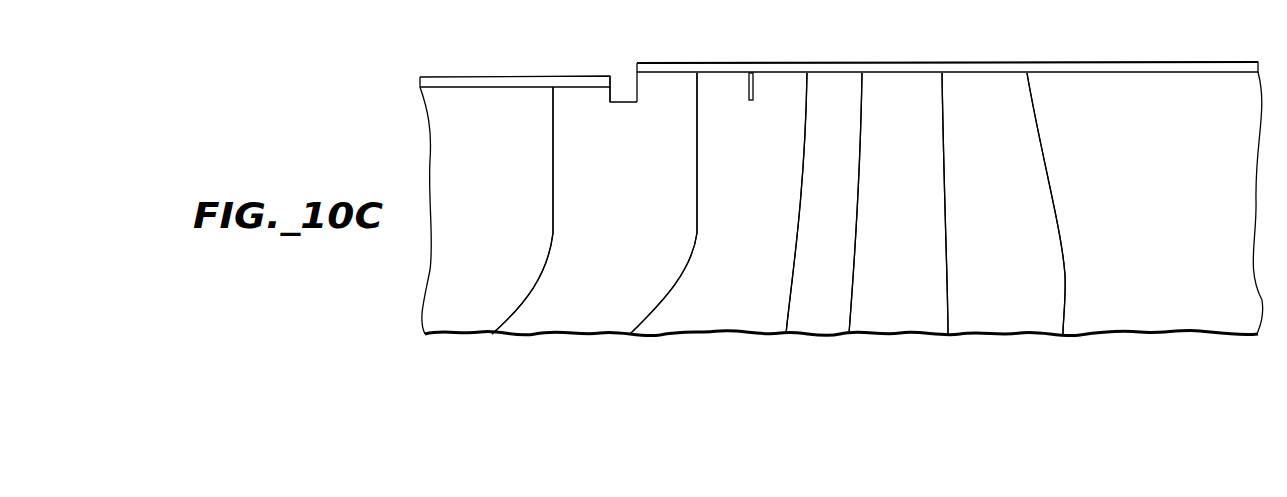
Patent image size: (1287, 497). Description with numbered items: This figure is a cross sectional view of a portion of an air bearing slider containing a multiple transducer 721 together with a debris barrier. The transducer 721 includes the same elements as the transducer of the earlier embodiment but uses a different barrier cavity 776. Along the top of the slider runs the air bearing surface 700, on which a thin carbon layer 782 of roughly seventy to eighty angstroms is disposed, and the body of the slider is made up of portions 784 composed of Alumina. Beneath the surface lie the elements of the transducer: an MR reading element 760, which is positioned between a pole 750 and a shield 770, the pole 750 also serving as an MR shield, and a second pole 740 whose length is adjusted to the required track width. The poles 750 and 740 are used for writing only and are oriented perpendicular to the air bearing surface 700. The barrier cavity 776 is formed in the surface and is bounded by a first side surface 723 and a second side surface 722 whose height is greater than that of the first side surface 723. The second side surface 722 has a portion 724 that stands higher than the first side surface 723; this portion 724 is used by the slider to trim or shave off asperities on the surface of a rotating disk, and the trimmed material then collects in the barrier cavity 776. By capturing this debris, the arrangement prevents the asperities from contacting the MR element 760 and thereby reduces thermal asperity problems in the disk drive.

The air bearing surface 700 is at (712, 62).
The multiple transducer 721 is at (978, 62).
The second side surface 722 is at (636, 88).
The first side surface 723 is at (612, 76).
The portion 724 is at (636, 62).
The barrier cavity 776 is at (622, 88).
The MR reading element 760 is at (751, 101).
The carbon layer 782 is at (500, 81).
The portions 784 is at (1185, 254).
The shield 770 is at (635, 254).
The pole 750 is at (848, 254).
The pole 740 is at (1023, 254).